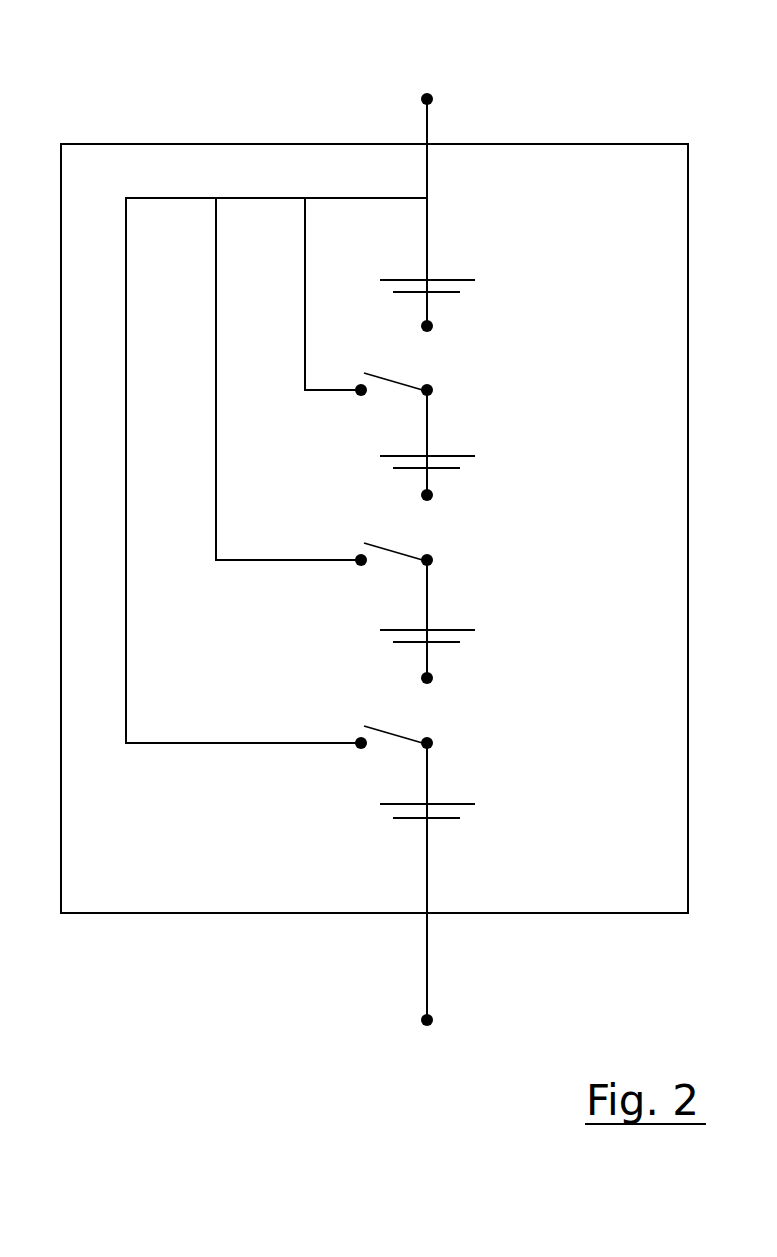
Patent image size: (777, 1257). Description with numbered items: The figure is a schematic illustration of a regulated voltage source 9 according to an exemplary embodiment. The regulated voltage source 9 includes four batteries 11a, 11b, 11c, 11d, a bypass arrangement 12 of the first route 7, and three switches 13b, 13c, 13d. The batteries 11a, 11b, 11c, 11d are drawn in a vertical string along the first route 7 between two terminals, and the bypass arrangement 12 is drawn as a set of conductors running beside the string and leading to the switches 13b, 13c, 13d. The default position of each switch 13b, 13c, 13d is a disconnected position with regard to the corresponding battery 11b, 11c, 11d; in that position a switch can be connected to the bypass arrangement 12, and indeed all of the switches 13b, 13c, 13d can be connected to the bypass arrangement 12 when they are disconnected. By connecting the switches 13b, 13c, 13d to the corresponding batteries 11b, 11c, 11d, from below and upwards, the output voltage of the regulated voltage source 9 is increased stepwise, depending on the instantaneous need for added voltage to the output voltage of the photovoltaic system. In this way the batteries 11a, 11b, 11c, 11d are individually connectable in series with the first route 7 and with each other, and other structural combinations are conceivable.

The regulated voltage source 9 is at (552, 133).
The first route 7 is at (428, 969).
The bypass arrangement 12 is at (166, 743).
The battery 11a is at (462, 812).
The battery 11b is at (466, 640).
The battery 11c is at (466, 465).
The battery 11d is at (462, 290).
The switch 13b is at (398, 735).
The switch 13c is at (398, 552).
The switch 13d is at (398, 382).